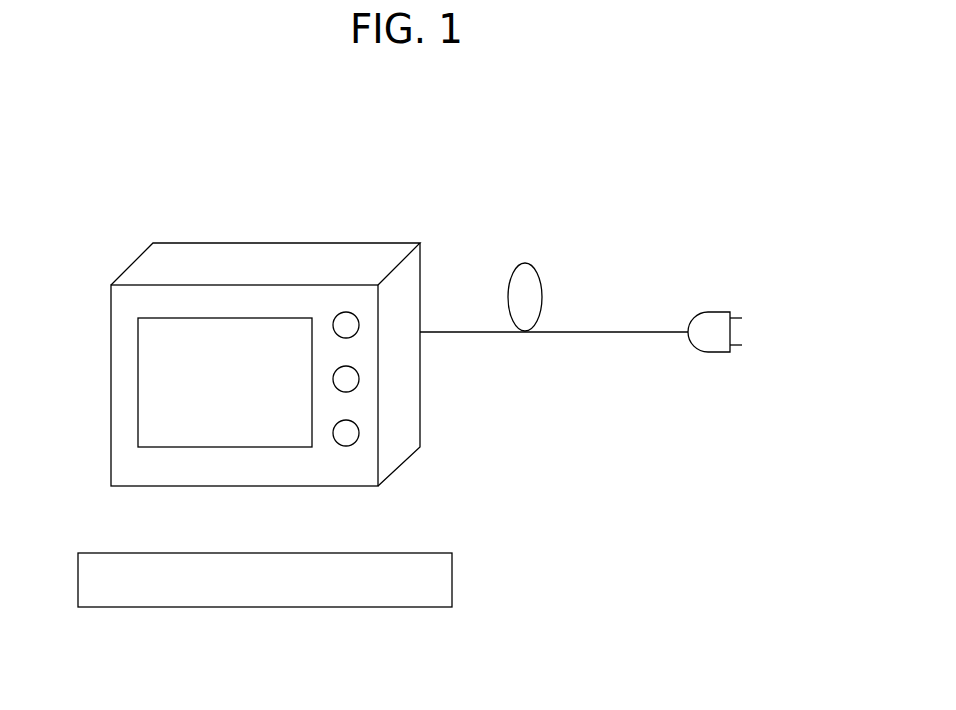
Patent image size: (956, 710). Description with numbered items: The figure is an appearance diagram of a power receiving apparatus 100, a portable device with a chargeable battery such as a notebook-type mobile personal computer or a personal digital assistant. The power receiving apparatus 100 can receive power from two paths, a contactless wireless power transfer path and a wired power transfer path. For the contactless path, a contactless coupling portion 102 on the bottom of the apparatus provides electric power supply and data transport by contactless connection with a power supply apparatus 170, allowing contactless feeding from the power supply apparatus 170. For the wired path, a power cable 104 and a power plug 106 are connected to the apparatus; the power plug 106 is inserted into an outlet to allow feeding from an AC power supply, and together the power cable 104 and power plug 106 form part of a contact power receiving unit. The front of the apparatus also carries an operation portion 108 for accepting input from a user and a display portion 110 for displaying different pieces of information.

The power receiving apparatus 100 is at (152, 223).
The contactless coupling portion 102 is at (232, 472).
The power cable 104 is at (520, 285).
The power plug 106 is at (707, 318).
The operation portion 108 is at (345, 379).
The display portion 110 is at (150, 360).
The power supply apparatus 170 is at (305, 597).